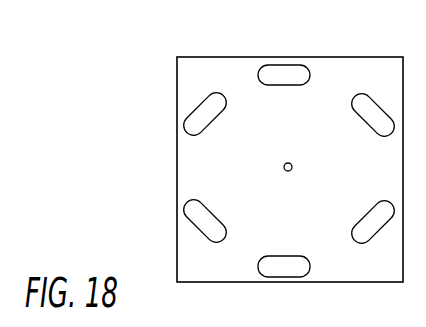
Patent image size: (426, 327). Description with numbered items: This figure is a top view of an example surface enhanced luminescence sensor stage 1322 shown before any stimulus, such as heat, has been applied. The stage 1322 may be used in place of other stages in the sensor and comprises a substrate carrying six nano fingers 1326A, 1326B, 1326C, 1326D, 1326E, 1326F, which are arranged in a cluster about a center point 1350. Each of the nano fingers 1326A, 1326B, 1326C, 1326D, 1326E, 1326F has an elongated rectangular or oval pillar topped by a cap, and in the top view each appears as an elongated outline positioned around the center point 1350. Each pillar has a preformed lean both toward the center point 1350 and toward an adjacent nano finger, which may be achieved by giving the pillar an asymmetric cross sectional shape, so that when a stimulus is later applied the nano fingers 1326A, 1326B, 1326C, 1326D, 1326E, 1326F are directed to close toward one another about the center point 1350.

The SEL sensor stage 1322 is at (142, 135).
The nano finger 1326A is at (202, 99).
The nano finger 1326B is at (284, 64).
The nano finger 1326C is at (380, 104).
The nano finger 1326D is at (367, 213).
The nano finger 1326E is at (310, 266).
The nano finger 1326F is at (197, 235).
The center point 1350 is at (284, 168).